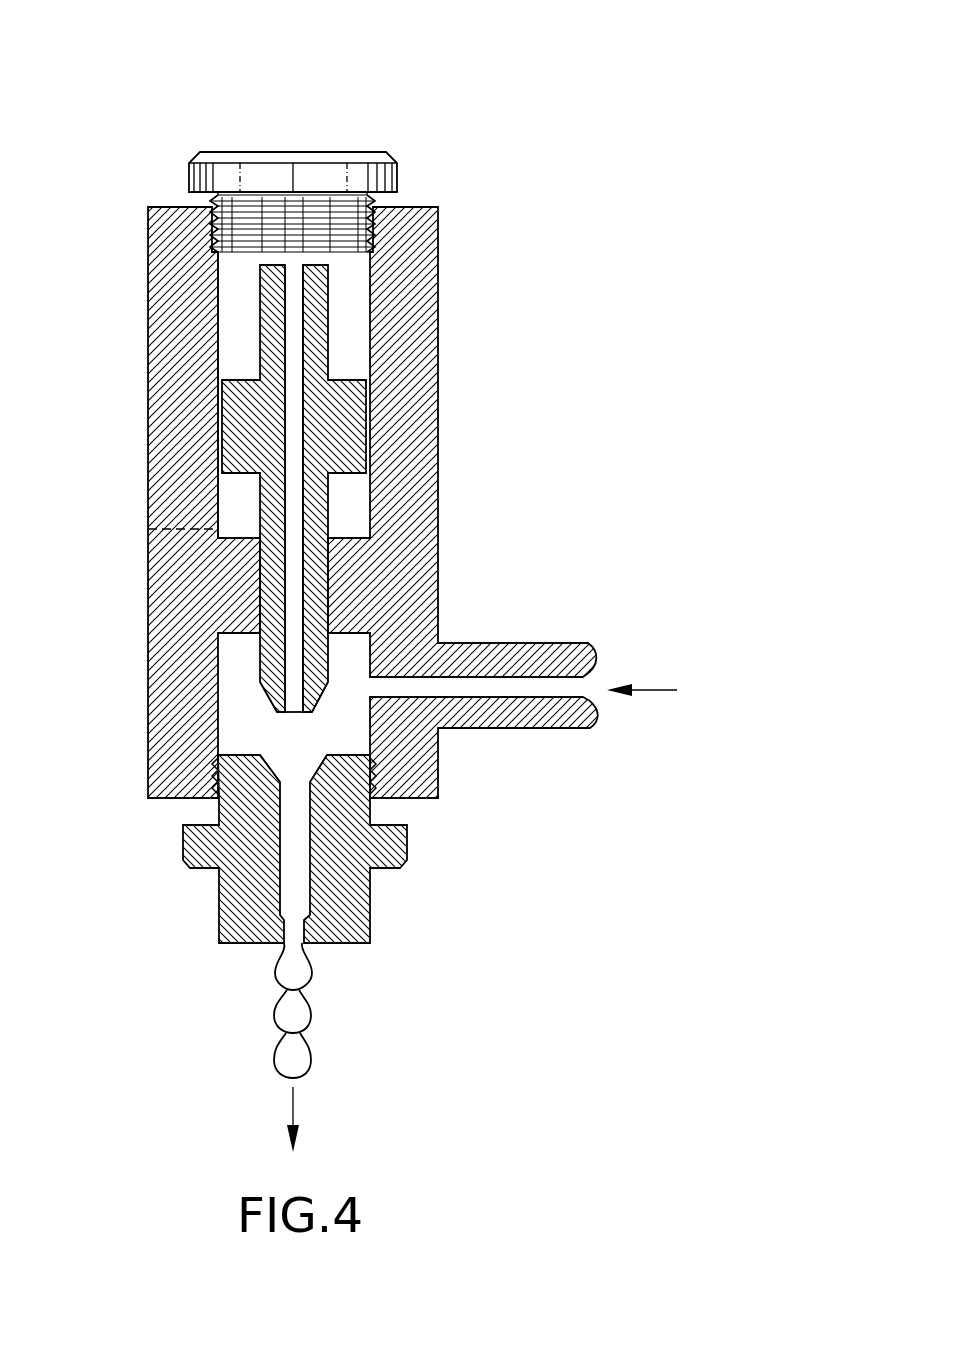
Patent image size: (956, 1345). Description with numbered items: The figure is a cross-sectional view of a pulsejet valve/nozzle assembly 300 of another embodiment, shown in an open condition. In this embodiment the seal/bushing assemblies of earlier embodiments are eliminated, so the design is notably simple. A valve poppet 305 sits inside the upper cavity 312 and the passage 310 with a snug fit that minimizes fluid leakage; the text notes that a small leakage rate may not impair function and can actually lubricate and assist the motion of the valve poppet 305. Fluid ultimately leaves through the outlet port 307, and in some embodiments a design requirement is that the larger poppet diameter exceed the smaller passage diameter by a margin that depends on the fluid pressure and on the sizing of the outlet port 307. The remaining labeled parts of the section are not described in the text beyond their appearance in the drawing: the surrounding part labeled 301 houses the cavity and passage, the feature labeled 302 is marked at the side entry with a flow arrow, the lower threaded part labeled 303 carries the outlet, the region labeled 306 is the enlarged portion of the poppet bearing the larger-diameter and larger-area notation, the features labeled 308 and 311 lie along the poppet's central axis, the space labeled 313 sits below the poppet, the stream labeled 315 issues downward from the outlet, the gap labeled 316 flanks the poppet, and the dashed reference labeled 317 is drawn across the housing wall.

The valve/nozzle assembly 300 is at (458, 115).
The valve body 301 is at (423, 230).
The inlet 302 is at (582, 690).
The nozzle 303 is at (345, 893).
The valve poppet 305 is at (315, 597).
The plunger flange section (diameter D3, area A3) 306 is at (350, 430).
The outlet port 307 is at (270, 767).
The plunger tip 308 is at (270, 705).
The passage 310 is at (258, 593).
The central channel 311 is at (292, 348).
The upper cavity 312 is at (355, 278).
The mixing chamber 313 is at (358, 738).
The droplets 315 is at (289, 944).
The annular gap 316 is at (350, 512).
The reference level 317 is at (147, 526).